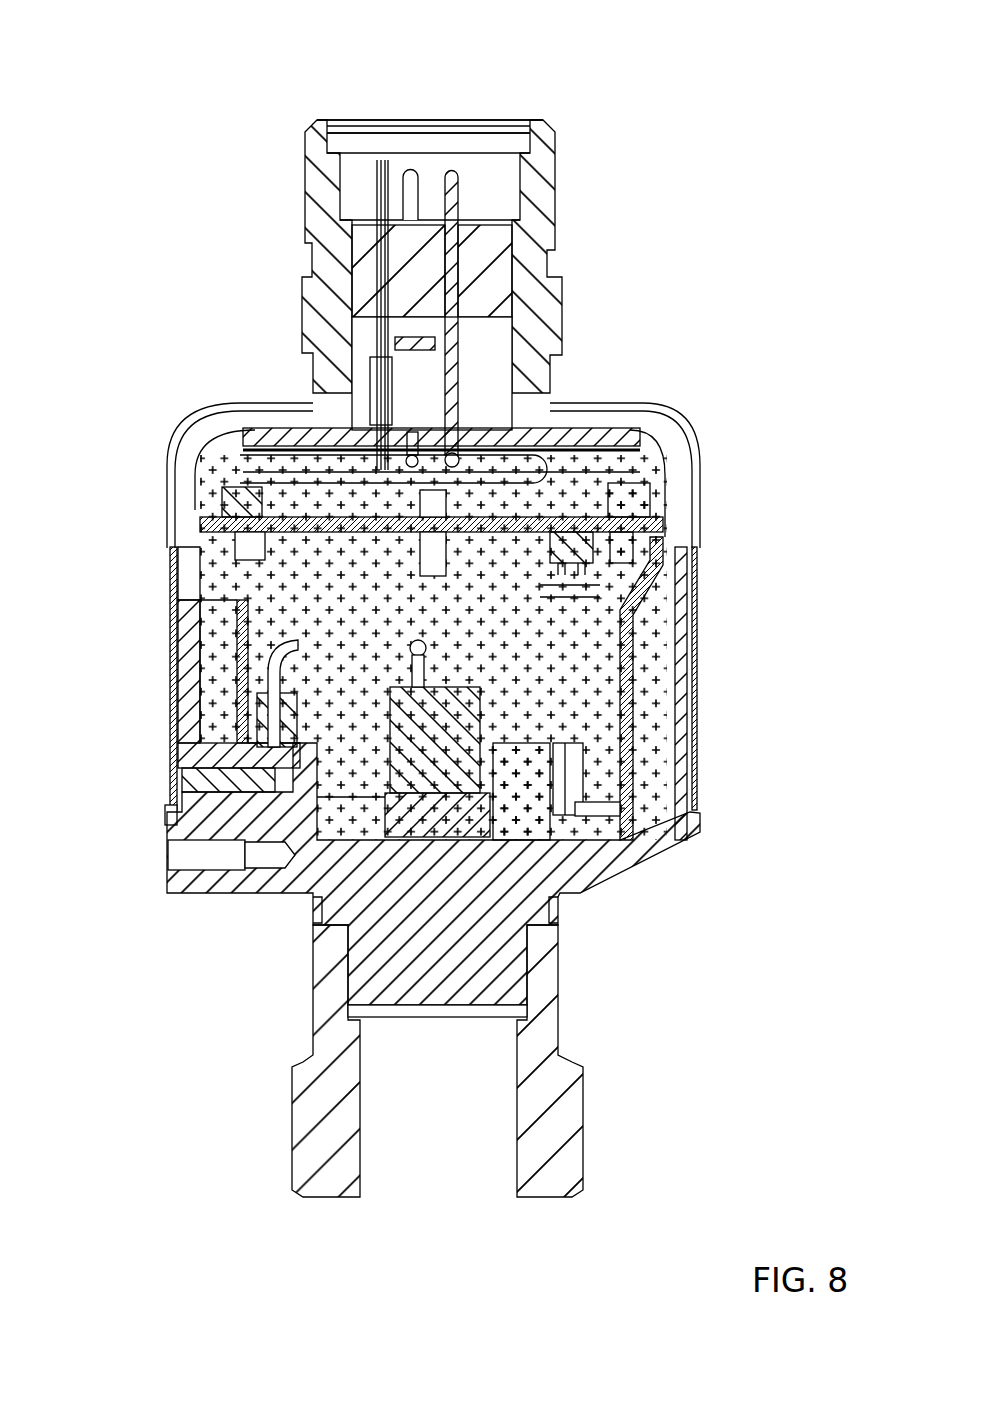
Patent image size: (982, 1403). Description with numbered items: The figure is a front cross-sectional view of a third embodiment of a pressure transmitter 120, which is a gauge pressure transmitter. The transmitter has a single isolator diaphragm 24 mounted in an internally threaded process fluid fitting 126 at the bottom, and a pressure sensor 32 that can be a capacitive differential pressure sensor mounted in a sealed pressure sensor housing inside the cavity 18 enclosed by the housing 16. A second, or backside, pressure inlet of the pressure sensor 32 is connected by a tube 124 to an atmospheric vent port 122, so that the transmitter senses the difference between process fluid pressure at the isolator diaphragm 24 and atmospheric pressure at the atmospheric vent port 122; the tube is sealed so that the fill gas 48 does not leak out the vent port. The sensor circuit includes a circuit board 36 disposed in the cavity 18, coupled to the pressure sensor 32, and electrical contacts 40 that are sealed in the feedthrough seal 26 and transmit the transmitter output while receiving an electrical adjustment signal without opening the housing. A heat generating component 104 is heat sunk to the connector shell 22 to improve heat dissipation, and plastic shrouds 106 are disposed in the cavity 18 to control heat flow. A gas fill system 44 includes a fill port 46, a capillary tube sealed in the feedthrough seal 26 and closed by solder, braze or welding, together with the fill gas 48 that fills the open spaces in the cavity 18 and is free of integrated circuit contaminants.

The housing 16 is at (642, 425).
The cavity 18 is at (332, 777).
The connector shell 22 is at (305, 172).
The isolator diaphragm 24 is at (437, 1017).
The feedthrough seal 26 is at (500, 288).
The pressure sensor 32 is at (390, 737).
The circuit board 36 is at (678, 508).
The electrical contacts 40 is at (462, 172).
The gas fill system 44 is at (358, 70).
The fill port 46 is at (366, 170).
The fill gas 48 is at (510, 723).
The heat generating component 104 is at (490, 360).
The plastic shrouds 106 is at (667, 455).
The pressure transmitter 120 is at (742, 70).
The atmospheric vent port 122 is at (182, 783).
The tube 124 is at (270, 650).
The process fluid fitting 126 is at (430, 1145).